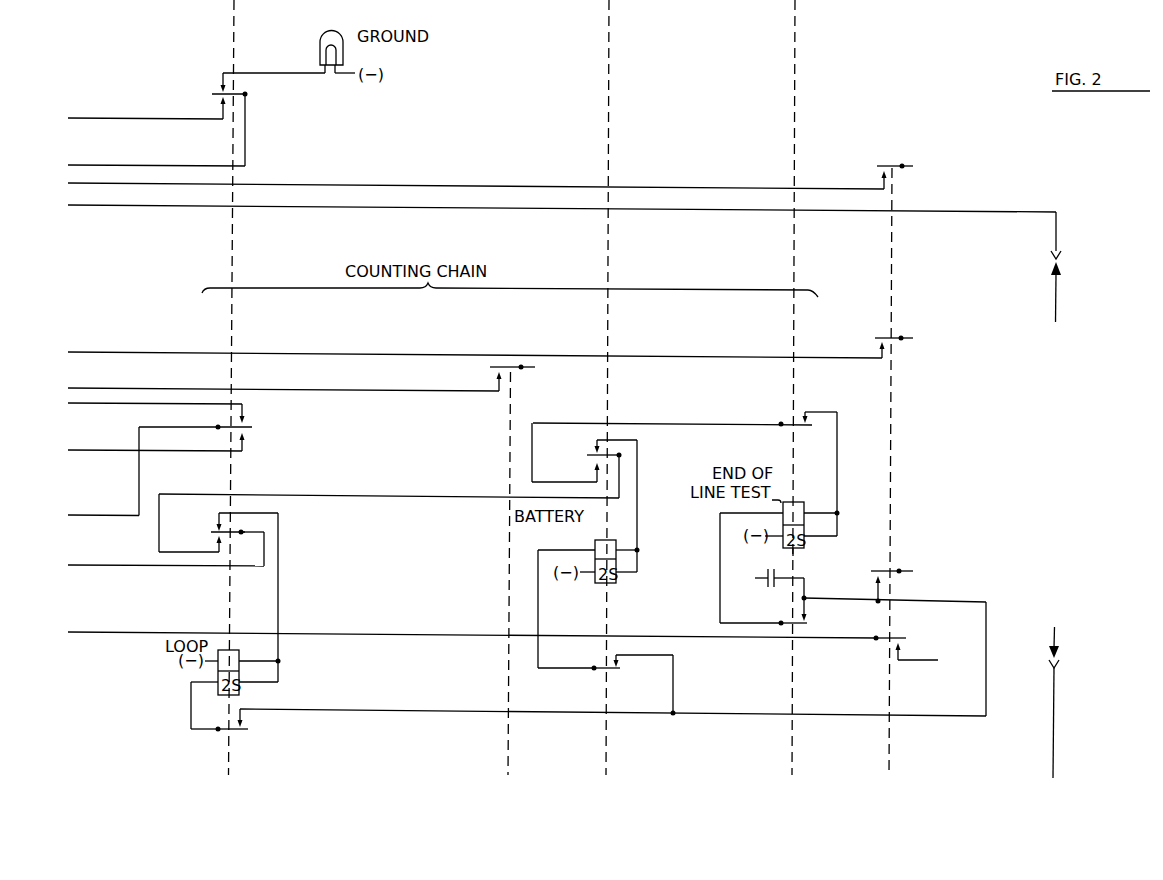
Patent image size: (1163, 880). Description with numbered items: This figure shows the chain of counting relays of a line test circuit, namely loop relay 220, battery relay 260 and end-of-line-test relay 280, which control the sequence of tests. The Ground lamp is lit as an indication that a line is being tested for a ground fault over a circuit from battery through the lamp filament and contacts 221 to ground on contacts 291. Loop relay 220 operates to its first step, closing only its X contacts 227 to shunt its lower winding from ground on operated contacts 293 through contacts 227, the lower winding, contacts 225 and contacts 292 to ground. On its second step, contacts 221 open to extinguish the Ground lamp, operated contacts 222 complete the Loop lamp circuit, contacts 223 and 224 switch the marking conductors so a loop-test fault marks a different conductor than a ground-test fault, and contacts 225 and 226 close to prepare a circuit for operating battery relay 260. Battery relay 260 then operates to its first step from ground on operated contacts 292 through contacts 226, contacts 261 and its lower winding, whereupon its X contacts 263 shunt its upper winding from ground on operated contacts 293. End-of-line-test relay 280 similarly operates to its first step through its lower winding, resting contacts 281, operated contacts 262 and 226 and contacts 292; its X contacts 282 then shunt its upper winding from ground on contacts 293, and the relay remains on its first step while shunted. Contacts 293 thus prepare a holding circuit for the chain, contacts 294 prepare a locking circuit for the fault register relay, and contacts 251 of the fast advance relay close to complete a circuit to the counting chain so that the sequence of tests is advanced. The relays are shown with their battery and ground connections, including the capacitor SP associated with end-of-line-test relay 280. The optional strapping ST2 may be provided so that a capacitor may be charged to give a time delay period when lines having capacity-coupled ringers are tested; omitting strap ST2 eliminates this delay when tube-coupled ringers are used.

The loop relay 220 is at (233, 387).
The contacts 221 is at (218, 85).
The contacts 222 is at (206, 108).
The contacts 223 is at (195, 417).
The contacts 224 is at (216, 441).
The contacts 225 is at (226, 523).
The contacts 226 is at (223, 540).
The X contacts 227 is at (252, 719).
The contacts 251 is at (505, 376).
The battery relay 260 is at (606, 387).
The contacts 261 is at (592, 452).
The contacts 262 is at (566, 452).
The X contacts 263 is at (617, 665).
The end-of-line-test relay 280 is at (796, 387).
The contacts 281 is at (799, 418).
The X contacts 282 is at (807, 620).
The contacts 291 is at (889, 176).
The contacts 292 is at (888, 346).
The contacts 293 is at (884, 579).
The contacts 294 is at (901, 646).
The capacitor SP is at (782, 568).
The optional strapping ST2 is at (1060, 292).